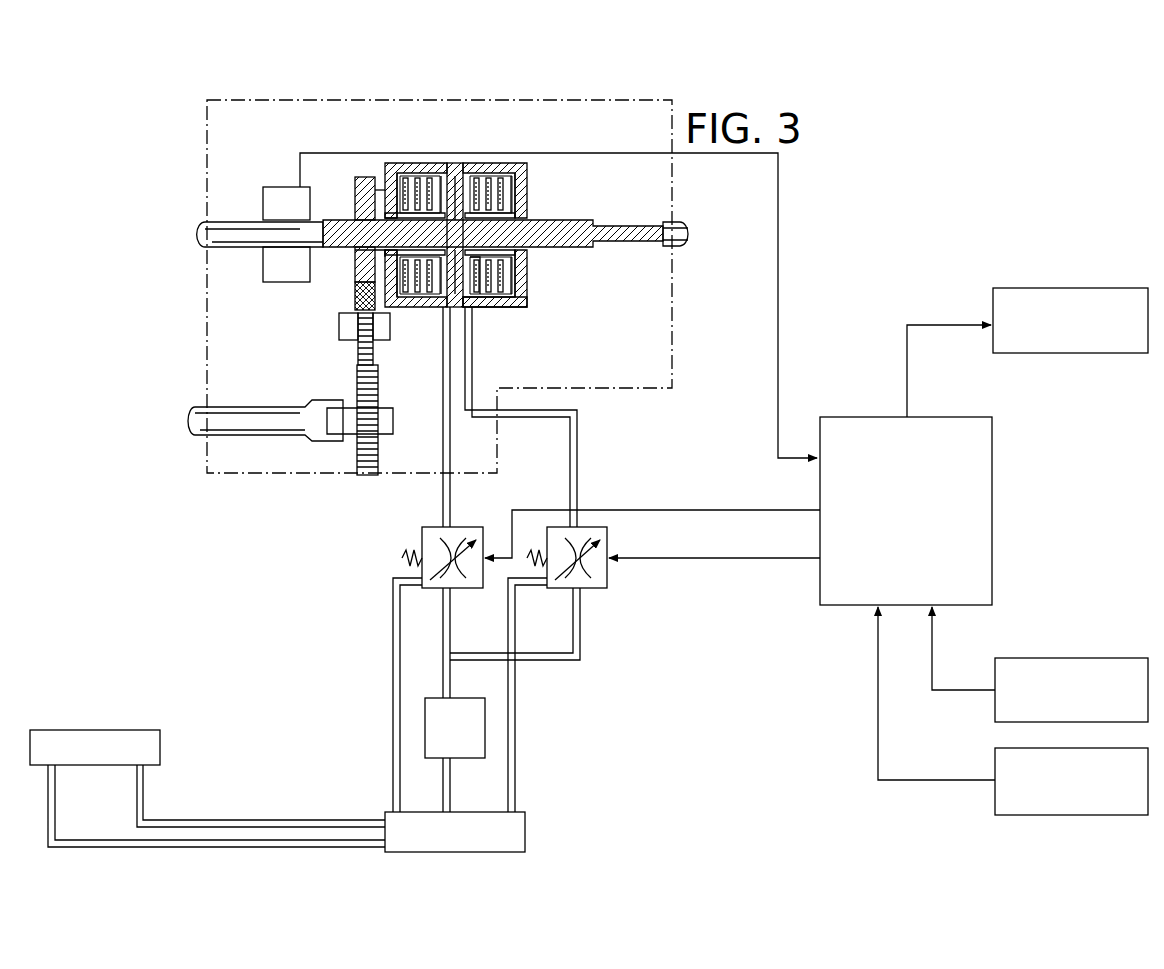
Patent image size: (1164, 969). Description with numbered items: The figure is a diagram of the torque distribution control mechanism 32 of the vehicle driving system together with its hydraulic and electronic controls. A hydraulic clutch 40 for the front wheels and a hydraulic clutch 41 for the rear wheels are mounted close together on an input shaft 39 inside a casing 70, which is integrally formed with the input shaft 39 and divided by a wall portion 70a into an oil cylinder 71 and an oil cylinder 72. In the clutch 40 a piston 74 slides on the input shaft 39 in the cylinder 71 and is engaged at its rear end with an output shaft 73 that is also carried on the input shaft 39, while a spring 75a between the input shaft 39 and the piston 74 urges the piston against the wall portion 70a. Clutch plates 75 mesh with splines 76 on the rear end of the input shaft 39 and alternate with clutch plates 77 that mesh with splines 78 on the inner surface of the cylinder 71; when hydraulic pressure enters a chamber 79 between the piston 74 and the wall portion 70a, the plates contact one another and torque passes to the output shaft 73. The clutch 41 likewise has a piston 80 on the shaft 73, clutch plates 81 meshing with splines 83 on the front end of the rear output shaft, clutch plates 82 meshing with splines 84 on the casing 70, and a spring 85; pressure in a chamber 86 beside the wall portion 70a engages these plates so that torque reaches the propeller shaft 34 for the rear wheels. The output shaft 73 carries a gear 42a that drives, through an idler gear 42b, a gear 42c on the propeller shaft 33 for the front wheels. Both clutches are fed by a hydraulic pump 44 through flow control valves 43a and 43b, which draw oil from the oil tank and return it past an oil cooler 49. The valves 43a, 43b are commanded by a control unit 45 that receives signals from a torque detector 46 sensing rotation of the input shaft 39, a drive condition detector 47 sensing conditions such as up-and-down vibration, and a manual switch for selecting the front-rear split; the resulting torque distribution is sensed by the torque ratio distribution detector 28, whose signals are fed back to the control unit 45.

The torque ratio distribution detector 28 is at (1072, 288).
The torque distribution control mechanism 32 is at (204, 106).
The propeller shaft for the front wheels 33 is at (240, 407).
The propeller shaft for the rear wheels 34 is at (645, 240).
The input shaft 39 is at (240, 238).
The hydraulic clutch for the front wheels 40 is at (408, 162).
The hydraulic clutch for the rear wheels 41 is at (487, 162).
The gear 42a is at (355, 292).
The idler gear 42b is at (358, 346).
The gear 42c is at (357, 456).
The flow control valve 43a is at (437, 527).
The flow control valve 43b is at (593, 588).
The hydraulic pump 44 is at (475, 758).
The control unit 45 is at (992, 508).
The torque detector 46 is at (285, 187).
The drive condition detector 47 is at (993, 710).
The oil cooler 49 is at (95, 730).
The casing 70 is at (403, 178).
The wall portion 70a is at (458, 310).
The oil cylinder 71 is at (428, 300).
The oil cylinder 72 is at (518, 295).
The output shaft 73 is at (395, 290).
The piston 74 is at (443, 300).
The clutch plates 75 is at (430, 178).
The spring 75a is at (360, 254).
The splines 76 is at (385, 205).
The clutch plates 77 is at (385, 190).
The splines 78 is at (417, 178).
The chamber 79 is at (470, 294).
The piston 80 is at (500, 296).
The clutch plates 81 is at (503, 272).
The clutch plates 82 is at (512, 280).
The splines 83 is at (520, 240).
The splines 84 is at (478, 178).
The spring 85 is at (490, 210).
The chamber 86 is at (488, 300).